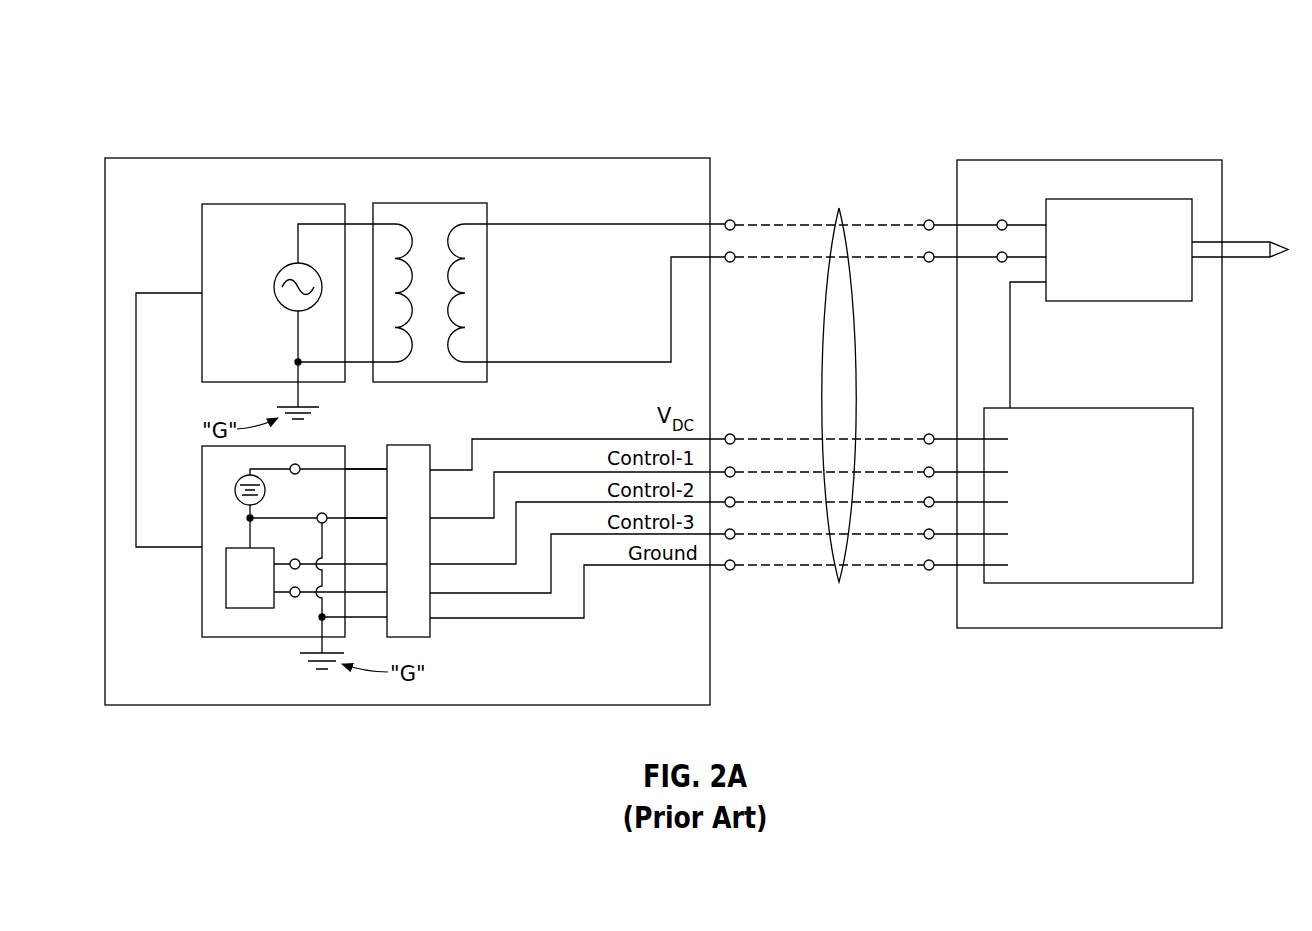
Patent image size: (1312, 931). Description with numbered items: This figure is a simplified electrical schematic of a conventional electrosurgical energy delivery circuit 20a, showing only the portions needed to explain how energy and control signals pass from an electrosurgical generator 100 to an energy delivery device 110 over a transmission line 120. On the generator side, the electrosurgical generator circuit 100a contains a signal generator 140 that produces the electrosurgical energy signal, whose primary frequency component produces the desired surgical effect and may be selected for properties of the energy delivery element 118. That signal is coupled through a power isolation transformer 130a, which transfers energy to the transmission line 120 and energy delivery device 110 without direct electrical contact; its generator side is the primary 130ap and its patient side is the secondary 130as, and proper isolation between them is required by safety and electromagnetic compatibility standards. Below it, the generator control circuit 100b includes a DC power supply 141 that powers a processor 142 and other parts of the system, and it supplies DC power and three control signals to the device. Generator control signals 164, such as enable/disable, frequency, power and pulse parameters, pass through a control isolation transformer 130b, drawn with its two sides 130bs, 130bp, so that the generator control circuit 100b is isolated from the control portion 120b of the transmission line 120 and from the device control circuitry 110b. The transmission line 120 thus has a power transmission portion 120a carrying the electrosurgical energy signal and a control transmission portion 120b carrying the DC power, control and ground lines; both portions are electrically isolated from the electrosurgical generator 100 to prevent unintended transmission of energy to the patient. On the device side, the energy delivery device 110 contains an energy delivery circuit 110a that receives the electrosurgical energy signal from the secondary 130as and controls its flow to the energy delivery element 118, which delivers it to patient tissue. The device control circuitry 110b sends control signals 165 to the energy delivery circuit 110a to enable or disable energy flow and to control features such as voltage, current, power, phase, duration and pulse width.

The electrosurgical energy delivery circuit 20a is at (958, 56).
The electrosurgical generator 100 is at (356, 141).
The electrosurgical generator circuit 100a is at (202, 233).
The generator control circuit 100b is at (202, 610).
The energy delivery device 110 is at (1046, 146).
The energy delivery circuit 110a is at (1117, 199).
The device control circuitry 110b is at (1087, 583).
The energy delivery element 118 is at (1240, 240).
The transmission line 120 is at (839, 208).
The power transmission portion 120a is at (792, 223).
The control transmission portion 120b is at (792, 437).
The power isolation transformer 130a is at (500, 380).
The secondary of power isolation transformer 130as is at (385, 223).
The primary of power isolation transformer 130ap is at (463, 223).
The control isolation transformer 130b is at (442, 644).
The secondary side of control transformer 130bs is at (383, 462).
The primary side of control transformer 130bp is at (432, 460).
The signal generator 140 is at (289, 266).
The DC power supply 141 is at (236, 488).
The processor 142 is at (248, 610).
The generator control signals 164 is at (136, 415).
The control signals 165 is at (1010, 370).